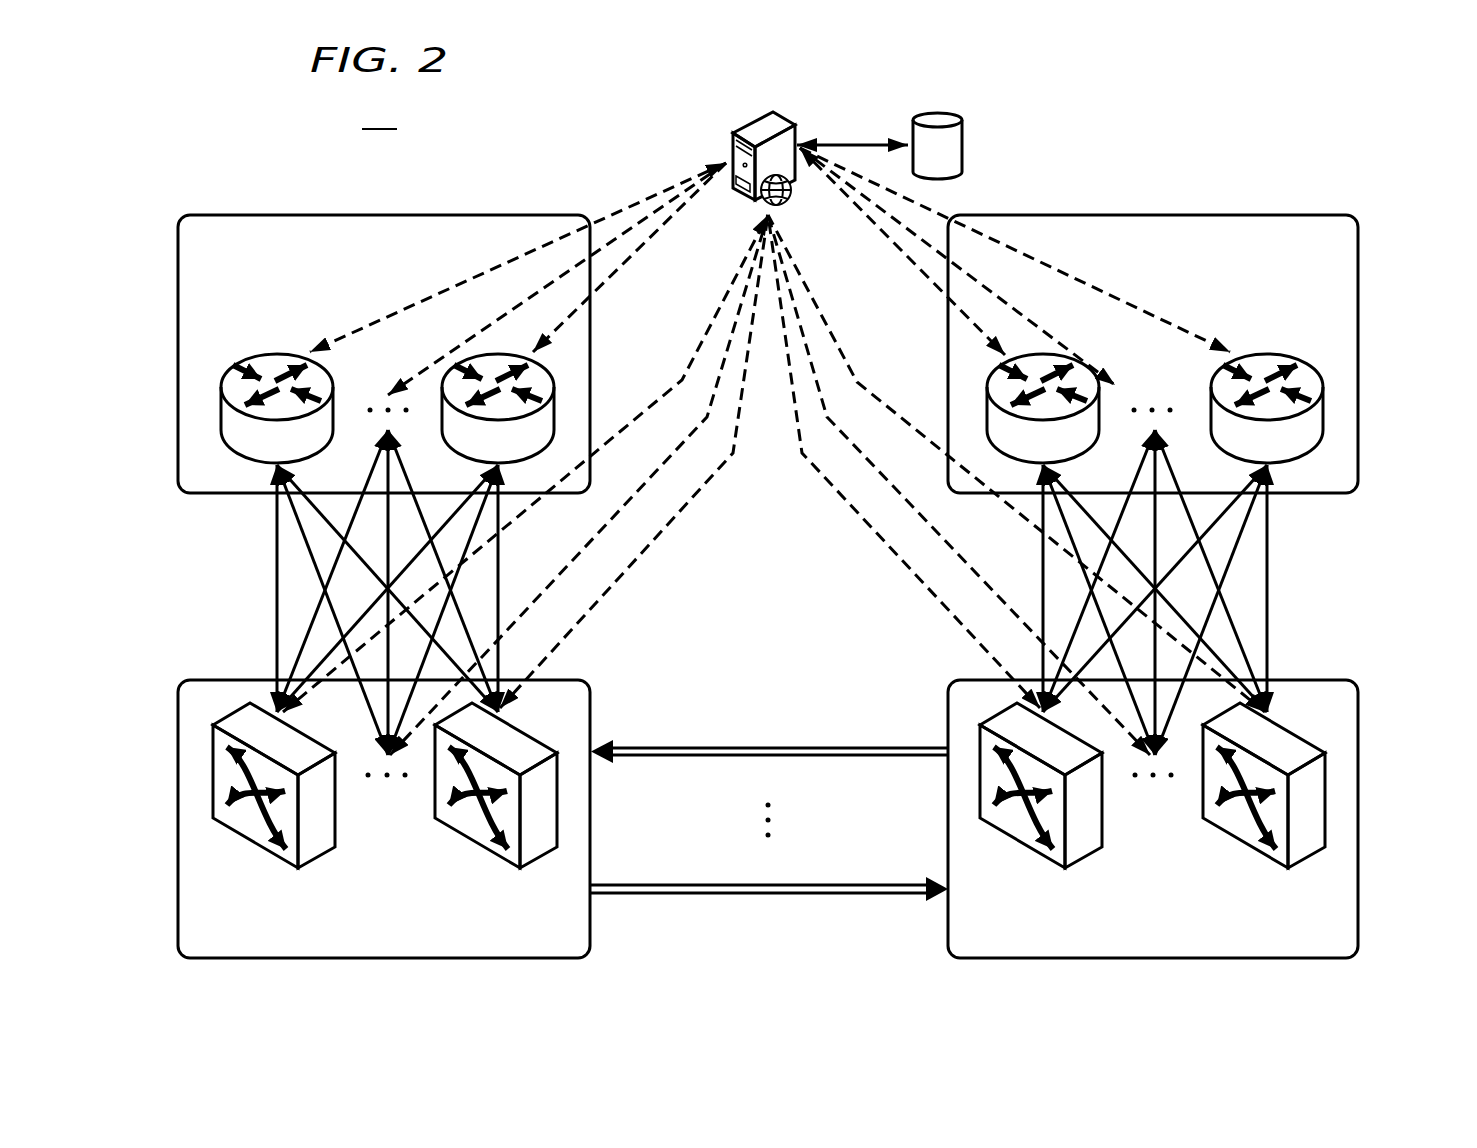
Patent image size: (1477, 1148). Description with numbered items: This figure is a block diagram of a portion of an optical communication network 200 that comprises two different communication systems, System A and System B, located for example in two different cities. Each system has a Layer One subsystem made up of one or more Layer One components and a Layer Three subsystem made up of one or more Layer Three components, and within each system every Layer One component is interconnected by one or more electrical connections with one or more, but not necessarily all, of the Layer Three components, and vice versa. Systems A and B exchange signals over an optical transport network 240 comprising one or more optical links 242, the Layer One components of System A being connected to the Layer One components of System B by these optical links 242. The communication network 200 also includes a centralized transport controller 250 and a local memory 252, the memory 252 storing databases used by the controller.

The optical communication network 200 is at (769, 150).
The optical transport network 240 is at (770, 714).
The optical link 242 is at (846, 747).
The centralized transport controller 250 is at (732, 131).
The local memory 252 is at (965, 150).